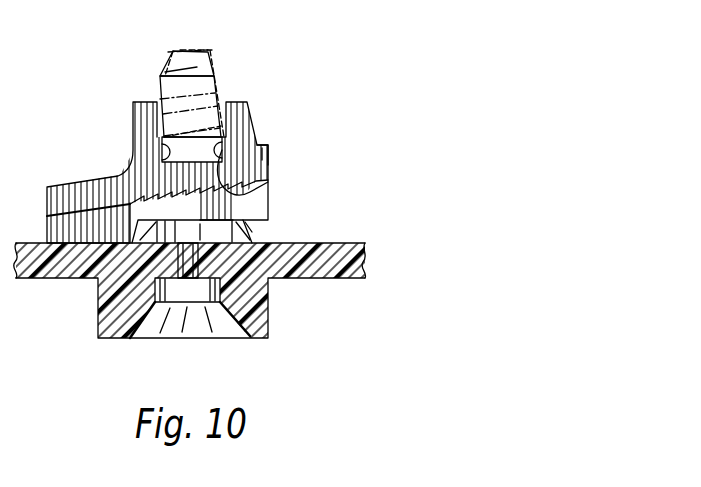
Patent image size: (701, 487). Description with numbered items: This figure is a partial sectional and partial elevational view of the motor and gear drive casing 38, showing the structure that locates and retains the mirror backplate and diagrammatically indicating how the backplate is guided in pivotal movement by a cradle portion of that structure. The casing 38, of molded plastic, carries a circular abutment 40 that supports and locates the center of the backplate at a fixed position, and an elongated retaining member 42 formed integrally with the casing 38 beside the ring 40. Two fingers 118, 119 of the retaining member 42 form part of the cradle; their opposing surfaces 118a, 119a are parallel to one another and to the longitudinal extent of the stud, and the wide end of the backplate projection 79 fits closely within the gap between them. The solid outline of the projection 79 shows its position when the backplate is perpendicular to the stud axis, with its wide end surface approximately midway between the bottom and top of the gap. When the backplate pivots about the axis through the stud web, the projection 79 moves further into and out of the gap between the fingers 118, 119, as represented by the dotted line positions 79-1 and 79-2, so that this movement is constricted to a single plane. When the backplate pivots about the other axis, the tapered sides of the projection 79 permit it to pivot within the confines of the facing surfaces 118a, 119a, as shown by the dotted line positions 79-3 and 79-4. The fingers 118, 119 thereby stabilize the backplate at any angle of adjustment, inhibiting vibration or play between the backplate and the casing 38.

The casing 38 is at (336, 243).
The circular abutment 40 is at (250, 233).
The retaining member 42 is at (270, 157).
The projection 79 is at (212, 75).
The dotted line position of projection 79-1 is at (172, 62).
The dotted line position of projection 79-2 is at (224, 139).
The dotted line position of projection 79-3 is at (162, 76).
The dotted line position of projection 79-4 is at (218, 70).
The finger 118 is at (133, 139).
The opposing surface 118a is at (172, 166).
The finger 119 is at (245, 104).
The opposing surface 119a is at (263, 187).